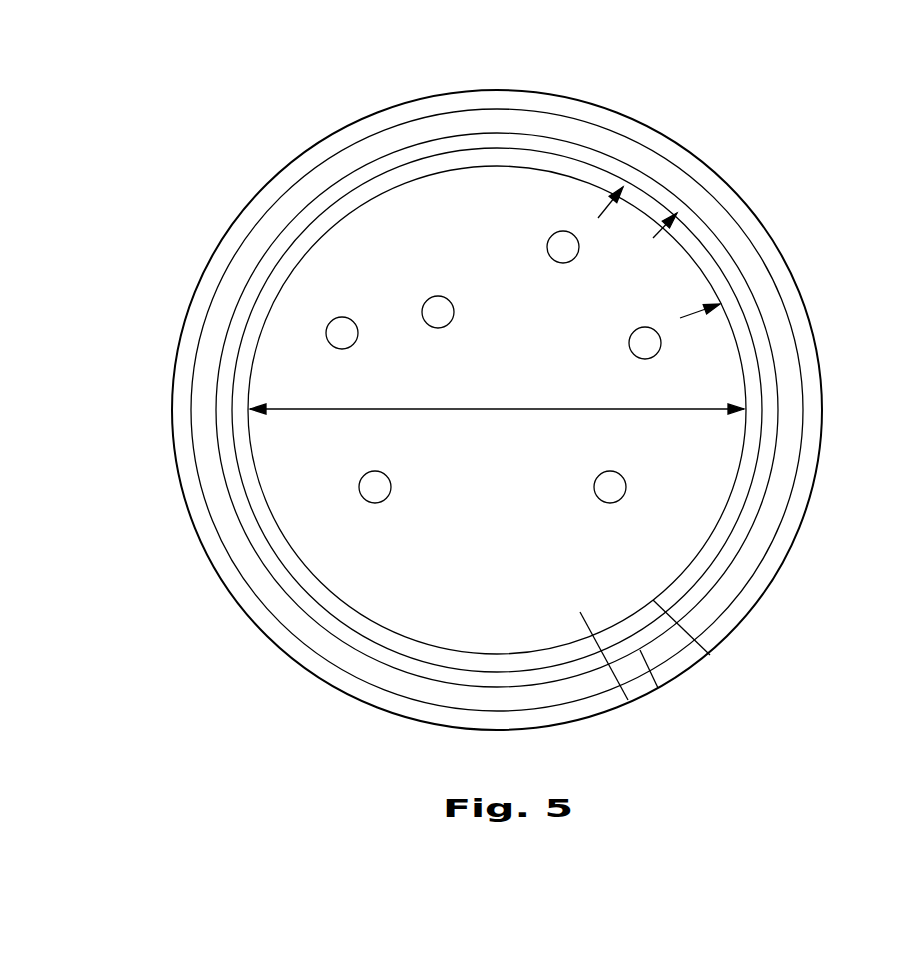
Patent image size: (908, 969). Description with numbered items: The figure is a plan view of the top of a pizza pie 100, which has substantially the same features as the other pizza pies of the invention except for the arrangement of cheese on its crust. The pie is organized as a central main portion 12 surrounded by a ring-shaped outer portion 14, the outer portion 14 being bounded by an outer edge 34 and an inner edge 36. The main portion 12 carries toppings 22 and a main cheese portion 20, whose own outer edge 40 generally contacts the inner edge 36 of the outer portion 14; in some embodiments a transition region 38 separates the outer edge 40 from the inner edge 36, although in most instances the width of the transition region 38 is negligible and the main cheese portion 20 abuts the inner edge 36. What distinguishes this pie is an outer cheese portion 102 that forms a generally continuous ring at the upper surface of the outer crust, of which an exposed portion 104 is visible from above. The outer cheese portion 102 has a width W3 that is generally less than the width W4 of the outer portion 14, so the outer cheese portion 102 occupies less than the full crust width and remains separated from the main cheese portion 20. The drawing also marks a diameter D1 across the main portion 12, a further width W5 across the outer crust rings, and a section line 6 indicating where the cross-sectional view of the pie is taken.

The pizza pie 100 is at (300, 130).
The main portion 12 is at (500, 539).
The outer portion 14 is at (767, 594).
The main cheese portion 20 is at (628, 700).
The toppings 22 is at (638, 340).
The outer edge 34 is at (740, 630).
The inner edge 36 is at (658, 688).
The transition region 38 is at (690, 578).
The outer edge 40 is at (708, 655).
The outer cheese portion 102 is at (242, 582).
The exposed portion 104 is at (283, 614).
The inner diameter D1 is at (497, 431).
The width of outer cheese portion W3 is at (713, 181).
The width of outer portion W4 is at (665, 133).
The width W5 is at (748, 290).
The section line 6- 6 is at (502, 97).